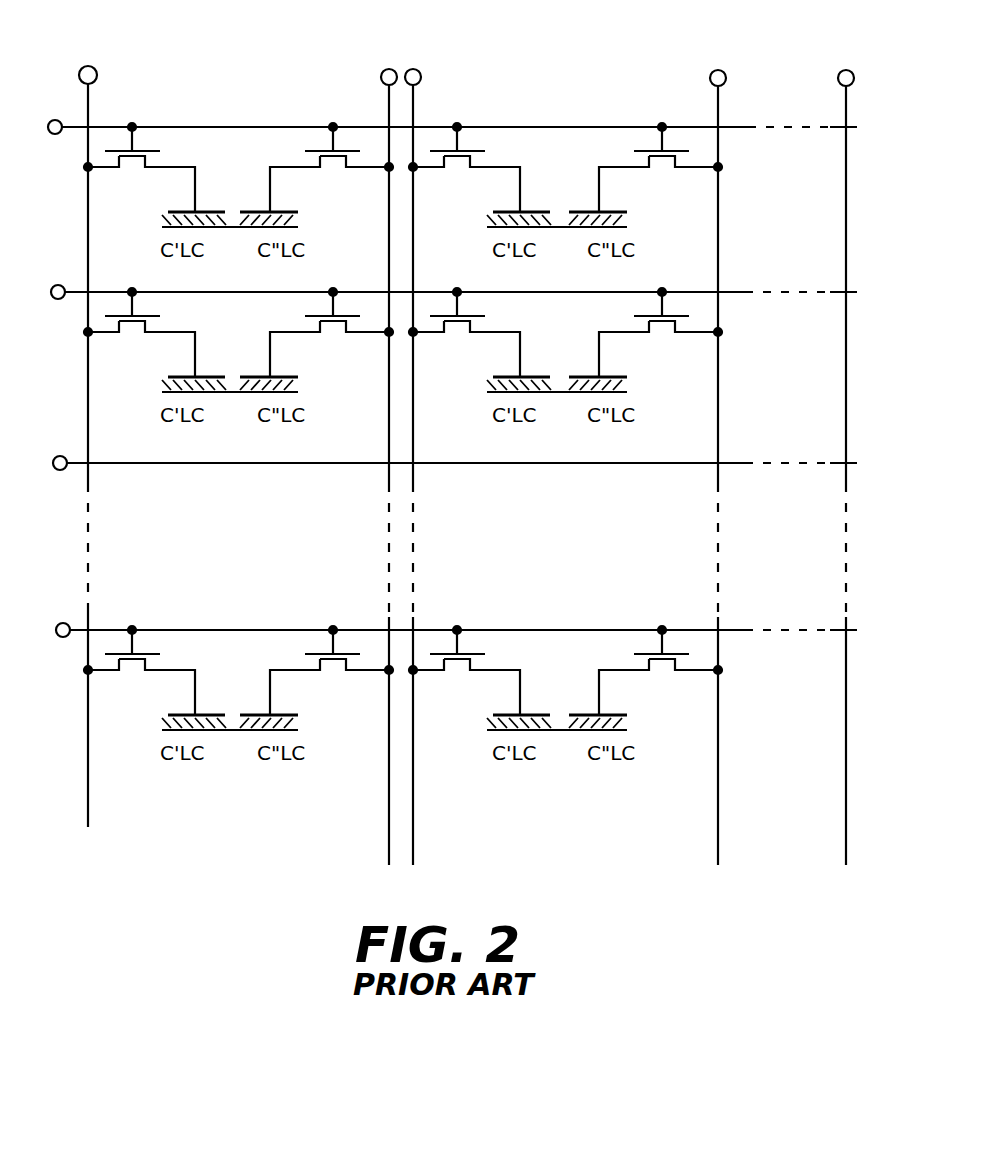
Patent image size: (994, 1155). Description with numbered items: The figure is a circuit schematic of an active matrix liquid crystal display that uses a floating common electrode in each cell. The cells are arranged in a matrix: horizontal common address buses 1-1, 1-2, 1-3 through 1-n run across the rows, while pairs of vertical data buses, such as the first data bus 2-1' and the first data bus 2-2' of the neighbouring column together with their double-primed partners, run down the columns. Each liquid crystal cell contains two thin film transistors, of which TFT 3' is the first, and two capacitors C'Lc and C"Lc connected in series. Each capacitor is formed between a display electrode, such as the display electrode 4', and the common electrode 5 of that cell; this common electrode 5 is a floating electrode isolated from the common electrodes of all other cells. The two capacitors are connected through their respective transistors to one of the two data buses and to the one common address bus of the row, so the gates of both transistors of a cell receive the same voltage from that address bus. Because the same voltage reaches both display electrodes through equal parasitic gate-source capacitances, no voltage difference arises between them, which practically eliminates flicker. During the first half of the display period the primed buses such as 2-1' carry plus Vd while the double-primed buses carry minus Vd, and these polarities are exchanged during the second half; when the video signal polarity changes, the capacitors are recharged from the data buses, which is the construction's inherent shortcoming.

The TFT 3' is at (139, 142).
The display electrode 4' is at (465, 146).
The common electrode 5 is at (555, 222).
The data bus 2-1' is at (87, 429).
The data bus 2-2' is at (429, 453).
The common address bus 1-1 is at (434, 127).
The common address bus 1-2 is at (434, 292).
The common address bus 1-3 is at (435, 463).
The common address bus 1-n is at (436, 630).